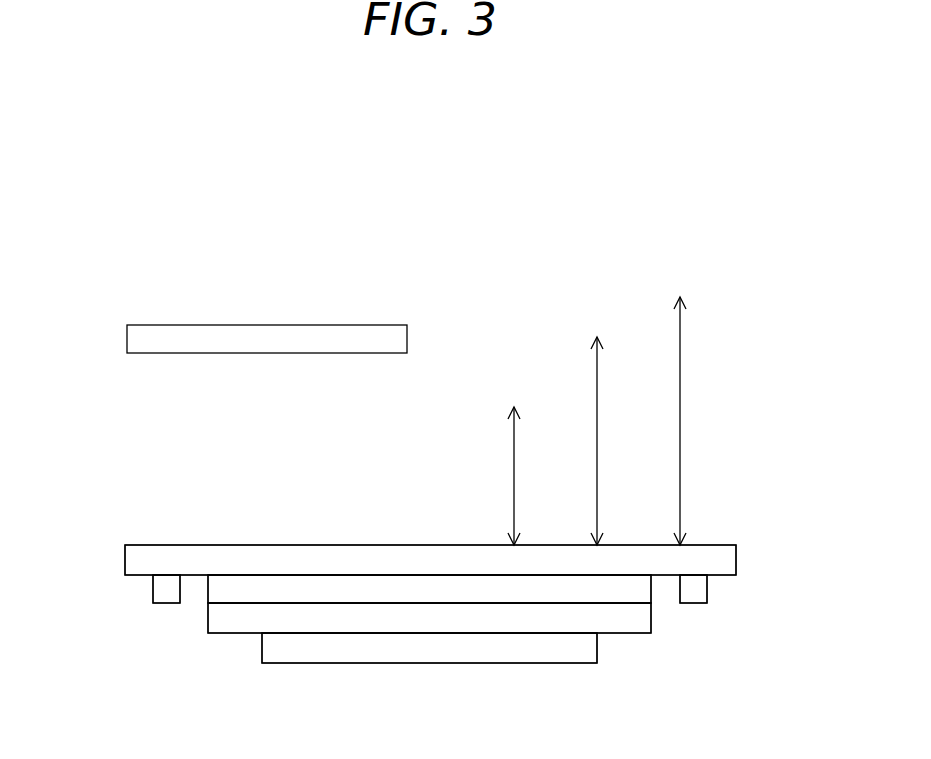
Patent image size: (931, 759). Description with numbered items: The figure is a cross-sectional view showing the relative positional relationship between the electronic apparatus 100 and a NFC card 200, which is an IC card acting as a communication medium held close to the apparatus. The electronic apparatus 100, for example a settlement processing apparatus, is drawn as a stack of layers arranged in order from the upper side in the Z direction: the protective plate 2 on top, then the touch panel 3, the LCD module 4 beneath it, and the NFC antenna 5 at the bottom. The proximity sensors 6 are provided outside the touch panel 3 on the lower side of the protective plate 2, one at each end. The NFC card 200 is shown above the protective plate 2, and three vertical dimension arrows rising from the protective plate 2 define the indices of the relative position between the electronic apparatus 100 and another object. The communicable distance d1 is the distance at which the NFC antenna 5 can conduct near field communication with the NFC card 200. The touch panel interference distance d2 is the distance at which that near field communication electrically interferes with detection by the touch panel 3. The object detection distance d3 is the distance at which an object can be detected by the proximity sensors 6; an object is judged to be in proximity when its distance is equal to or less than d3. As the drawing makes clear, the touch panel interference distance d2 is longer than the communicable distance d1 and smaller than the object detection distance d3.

The electronic apparatus 100 is at (313, 513).
The NFC card 200 is at (392, 304).
The protective plate 2 is at (737, 558).
The touch panel 3 is at (651, 590).
The LCD module 4 is at (635, 633).
The NFC antenna 5 is at (493, 663).
The proximity sensor 6 is at (154, 592).
The communicable distance d1 is at (528, 476).
The touch panel interference distance d2 is at (612, 441).
The object detection distance d3 is at (695, 421).